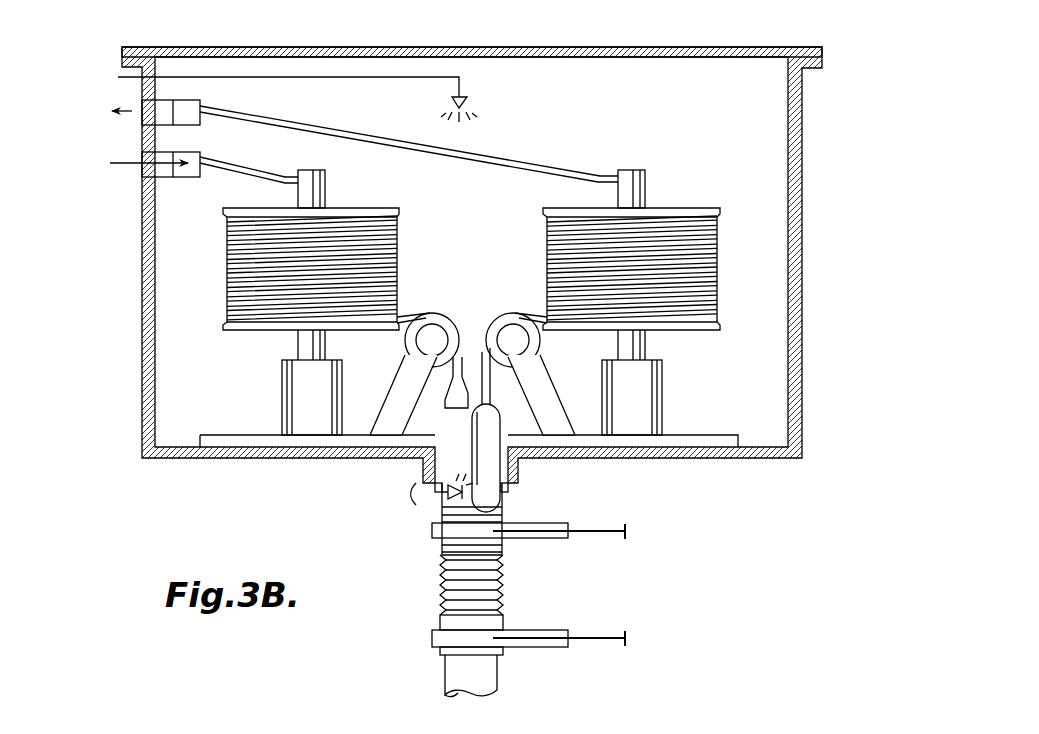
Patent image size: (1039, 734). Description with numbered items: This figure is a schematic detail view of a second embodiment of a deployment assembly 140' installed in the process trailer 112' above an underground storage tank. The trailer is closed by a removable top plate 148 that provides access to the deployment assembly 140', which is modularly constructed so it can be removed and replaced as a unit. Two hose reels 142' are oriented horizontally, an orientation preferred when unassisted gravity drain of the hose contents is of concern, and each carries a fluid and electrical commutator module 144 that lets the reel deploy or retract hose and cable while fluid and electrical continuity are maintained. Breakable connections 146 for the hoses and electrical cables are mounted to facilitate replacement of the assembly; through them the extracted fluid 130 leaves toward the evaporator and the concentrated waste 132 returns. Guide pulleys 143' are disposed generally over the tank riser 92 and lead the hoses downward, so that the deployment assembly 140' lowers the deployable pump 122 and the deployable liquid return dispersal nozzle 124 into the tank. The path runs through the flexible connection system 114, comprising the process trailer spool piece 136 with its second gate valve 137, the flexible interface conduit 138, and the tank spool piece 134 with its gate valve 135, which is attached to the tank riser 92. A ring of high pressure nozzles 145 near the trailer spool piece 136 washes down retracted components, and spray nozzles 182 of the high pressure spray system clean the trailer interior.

The tank riser 92 is at (506, 669).
The process trailer 112' is at (529, 265).
The flexible connection system 114 is at (664, 610).
The deployable pump 122 is at (500, 492).
The deployable liquid return dispersal nozzle 124 is at (446, 406).
The extracted fluid 130 is at (132, 111).
The concentrated waste 132 is at (112, 163).
The tank spool piece 134 is at (442, 648).
The gate valve 135 is at (603, 638).
The process trailer spool piece 136 is at (442, 549).
The second gate valve 137 is at (600, 531).
The flexible interface conduit 138 is at (503, 583).
The deployment assembly 140' is at (482, 269).
The hose reels 142' is at (475, 310).
The guide pulleys 143' is at (472, 339).
The fluid and electrical commutator module 144 is at (313, 190).
The high pressure nozzles 145 is at (443, 497).
The breakable connections 146 is at (200, 104).
The removable top plate 148 is at (713, 50).
The spray nozzles 182 is at (467, 102).